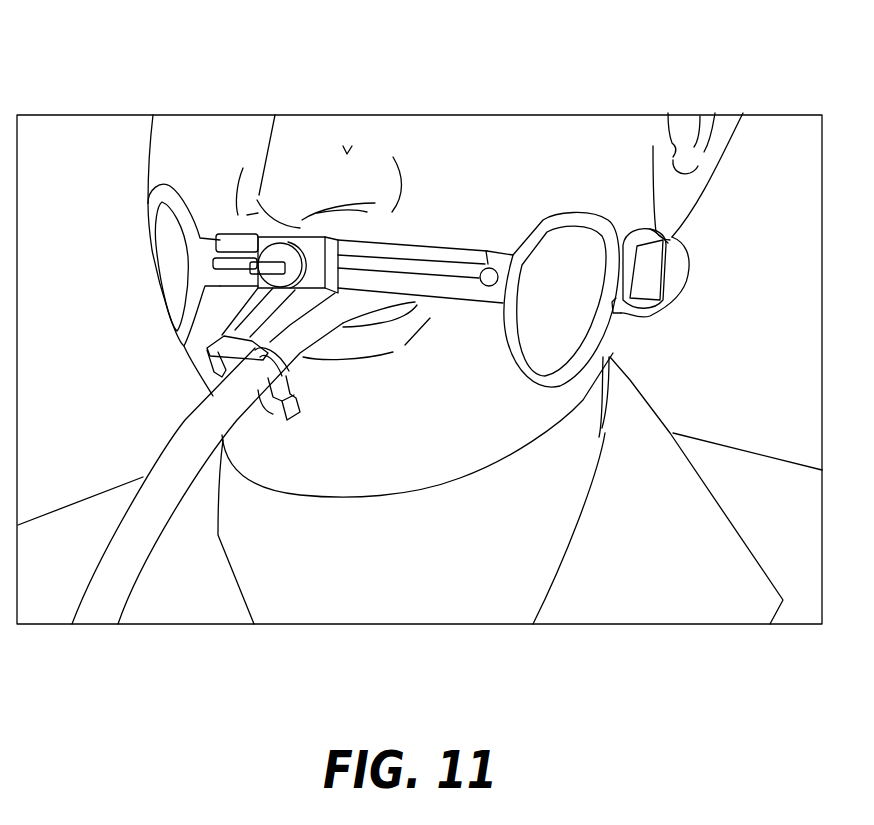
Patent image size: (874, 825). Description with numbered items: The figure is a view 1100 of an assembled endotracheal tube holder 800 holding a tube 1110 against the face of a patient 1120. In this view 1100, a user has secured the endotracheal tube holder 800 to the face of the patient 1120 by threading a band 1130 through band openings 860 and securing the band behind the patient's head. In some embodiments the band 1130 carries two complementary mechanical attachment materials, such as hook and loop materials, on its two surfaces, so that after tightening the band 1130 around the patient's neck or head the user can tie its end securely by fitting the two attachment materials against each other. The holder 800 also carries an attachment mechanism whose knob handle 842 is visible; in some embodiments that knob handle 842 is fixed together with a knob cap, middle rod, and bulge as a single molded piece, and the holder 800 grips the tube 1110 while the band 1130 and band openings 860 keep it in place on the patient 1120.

The view 1100 is at (619, 80).
The endotracheal tube holder 800 is at (425, 213).
The knob handle 842 is at (276, 241).
The tube 1110 is at (160, 413).
The patient 1120 is at (652, 334).
The band 1130 is at (668, 243).
The band openings 860 is at (660, 316).